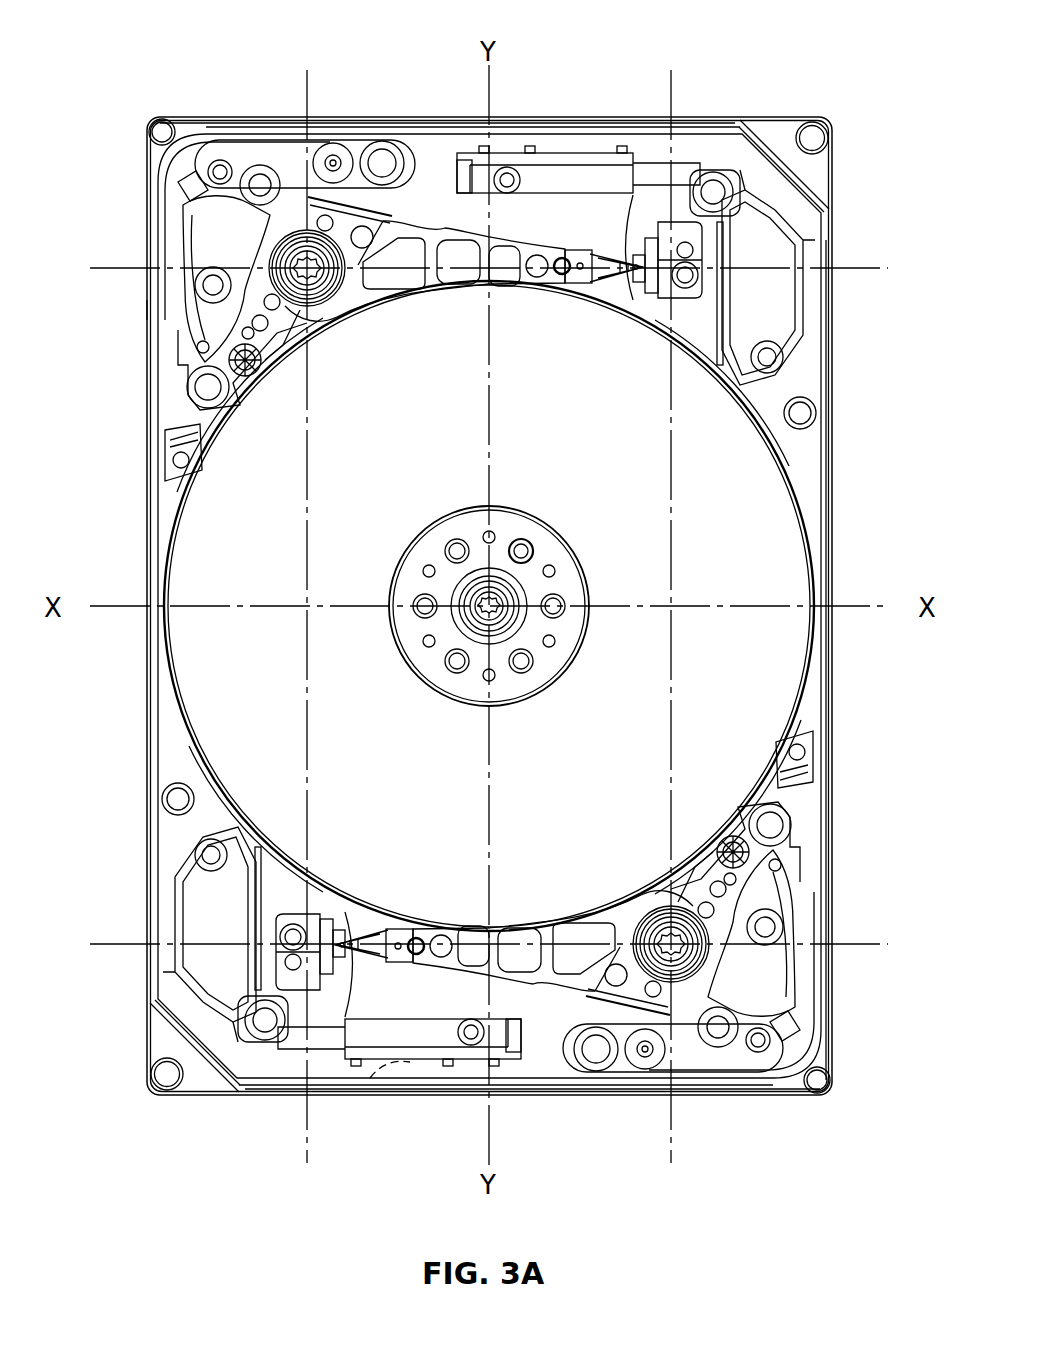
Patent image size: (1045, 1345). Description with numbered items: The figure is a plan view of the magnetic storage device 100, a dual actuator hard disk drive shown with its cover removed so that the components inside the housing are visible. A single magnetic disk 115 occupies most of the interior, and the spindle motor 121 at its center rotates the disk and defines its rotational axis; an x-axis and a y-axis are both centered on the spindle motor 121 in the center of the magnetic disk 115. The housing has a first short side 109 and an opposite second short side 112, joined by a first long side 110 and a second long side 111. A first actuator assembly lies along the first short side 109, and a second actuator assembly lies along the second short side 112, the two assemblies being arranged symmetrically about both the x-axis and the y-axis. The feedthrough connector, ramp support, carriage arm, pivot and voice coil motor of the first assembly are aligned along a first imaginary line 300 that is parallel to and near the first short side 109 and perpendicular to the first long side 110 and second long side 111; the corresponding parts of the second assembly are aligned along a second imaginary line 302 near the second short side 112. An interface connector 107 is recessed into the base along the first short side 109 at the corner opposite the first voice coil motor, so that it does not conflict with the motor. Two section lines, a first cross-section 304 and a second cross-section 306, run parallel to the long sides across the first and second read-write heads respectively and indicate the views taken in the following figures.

The magnetic storage device 100 is at (232, 47).
The interface connector 107 is at (368, 1080).
The first short side 109 is at (694, 1100).
The first long side 110 is at (150, 432).
The second long side 111 is at (826, 727).
The second short side 112 is at (712, 117).
The magnetic disk 115 is at (763, 488).
The spindle motor 121 is at (507, 613).
The first imaginary line 300 is at (882, 944).
The second imaginary line 302 is at (887, 267).
The first cross-section 304 is at (308, 96).
The second cross-section 306 is at (673, 80).